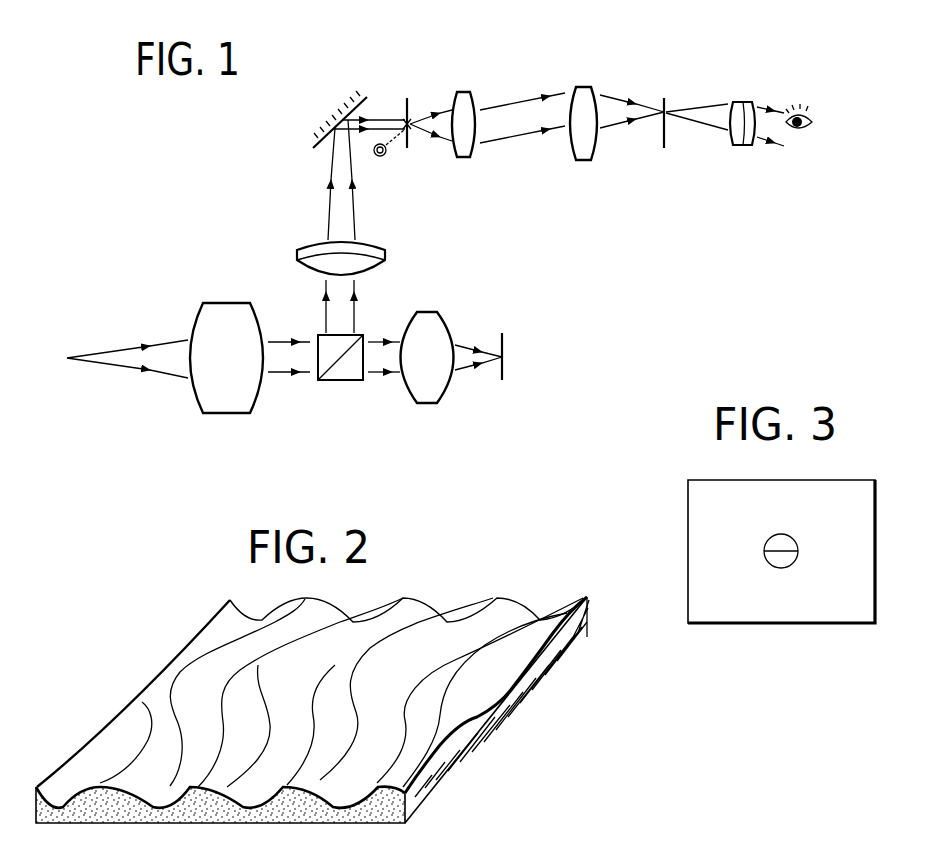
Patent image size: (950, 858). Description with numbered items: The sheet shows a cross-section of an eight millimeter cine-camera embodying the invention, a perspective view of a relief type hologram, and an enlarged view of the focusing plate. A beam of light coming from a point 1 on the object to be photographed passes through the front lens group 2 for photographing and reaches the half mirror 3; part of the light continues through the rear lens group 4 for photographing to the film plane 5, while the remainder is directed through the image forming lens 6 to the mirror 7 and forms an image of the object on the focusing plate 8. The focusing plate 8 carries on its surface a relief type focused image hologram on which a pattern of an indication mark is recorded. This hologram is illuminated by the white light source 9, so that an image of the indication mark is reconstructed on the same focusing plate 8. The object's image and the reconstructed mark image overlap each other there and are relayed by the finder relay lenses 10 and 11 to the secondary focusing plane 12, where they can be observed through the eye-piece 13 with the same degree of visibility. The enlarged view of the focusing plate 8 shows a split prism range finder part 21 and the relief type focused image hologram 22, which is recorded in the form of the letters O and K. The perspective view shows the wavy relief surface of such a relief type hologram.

In FIG. 1, the point on an object to be photographed 1 is at (67, 358).
In FIG. 1, the front lens group for photographing 2 is at (222, 413).
In FIG. 1, the half mirror 3 is at (345, 378).
In FIG. 1, the rear lens group for photographing 4 is at (423, 403).
In FIG. 1, the film plane 5 is at (504, 366).
In FIG. 1, the image forming lens 6 is at (297, 255).
In FIG. 1, the mirror 7 is at (352, 98).
In FIG. 1, the focusing plate 8 is at (410, 98).
In FIG. 3, the focusing plate 8 is at (688, 503).
In FIG. 1, the white light source 9 is at (381, 158).
In FIG. 1, the finder relay lens 10 is at (463, 158).
In FIG. 1, the finder relay lens 11 is at (583, 90).
In FIG. 1, the secondary focusing plane 12 is at (667, 98).
In FIG. 1, the eye-piece 13 is at (740, 147).
In FIG. 3, the split prism range finder part 21 is at (767, 563).
In FIG. 3, the relief type focused image hologram 22 is at (845, 530).